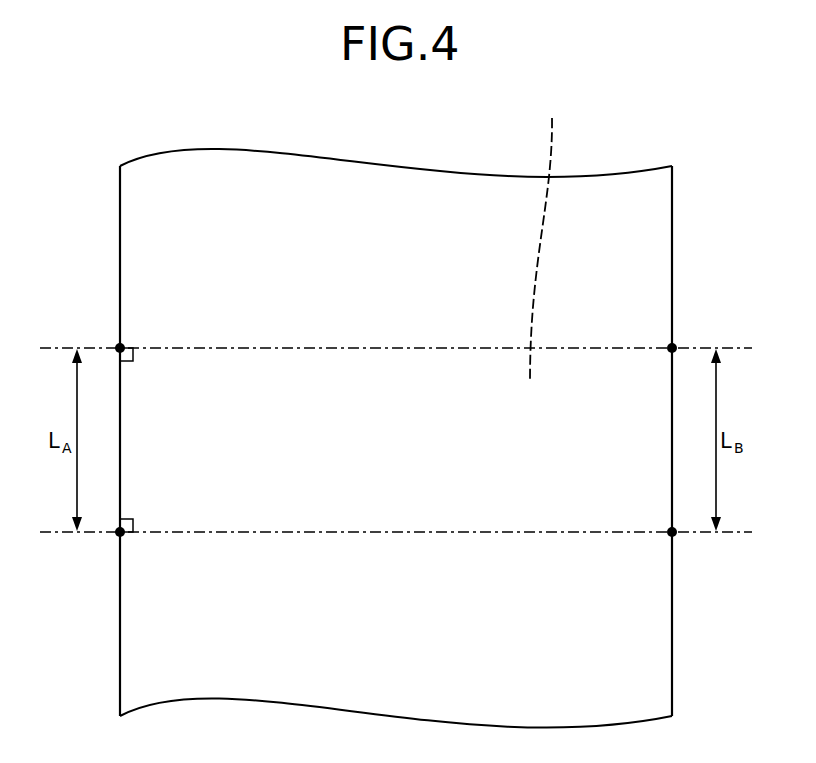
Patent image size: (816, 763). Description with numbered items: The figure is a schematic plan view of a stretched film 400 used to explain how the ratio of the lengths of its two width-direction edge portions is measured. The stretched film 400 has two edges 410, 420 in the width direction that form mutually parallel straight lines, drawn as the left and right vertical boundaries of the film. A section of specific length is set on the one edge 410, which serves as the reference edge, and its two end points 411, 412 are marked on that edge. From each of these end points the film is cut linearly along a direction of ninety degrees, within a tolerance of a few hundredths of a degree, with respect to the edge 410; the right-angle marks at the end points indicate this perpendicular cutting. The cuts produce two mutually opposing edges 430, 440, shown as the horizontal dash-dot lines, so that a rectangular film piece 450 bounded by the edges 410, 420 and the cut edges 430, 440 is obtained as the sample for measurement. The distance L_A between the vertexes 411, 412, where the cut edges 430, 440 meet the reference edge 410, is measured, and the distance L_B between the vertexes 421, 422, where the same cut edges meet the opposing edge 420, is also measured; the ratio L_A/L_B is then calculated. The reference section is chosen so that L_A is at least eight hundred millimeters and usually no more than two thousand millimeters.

The stretched film 400 is at (230, 167).
The edge 410 is at (120, 214).
The edge 420 is at (672, 210).
The end point 411 is at (120, 532).
The end point 412 is at (120, 348).
The vertex 421 is at (672, 532).
The vertex 422 is at (672, 348).
The edge appearing after cutting 430 is at (400, 533).
The edge appearing after cutting 440 is at (346, 348).
The rectangular film piece 450 is at (548, 236).